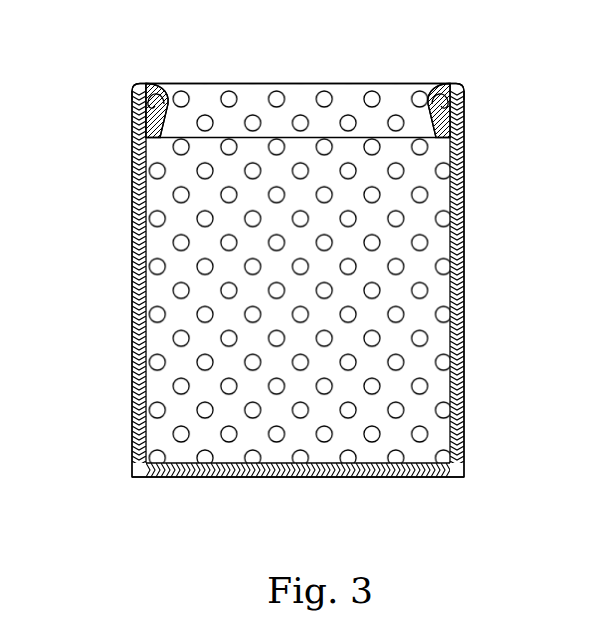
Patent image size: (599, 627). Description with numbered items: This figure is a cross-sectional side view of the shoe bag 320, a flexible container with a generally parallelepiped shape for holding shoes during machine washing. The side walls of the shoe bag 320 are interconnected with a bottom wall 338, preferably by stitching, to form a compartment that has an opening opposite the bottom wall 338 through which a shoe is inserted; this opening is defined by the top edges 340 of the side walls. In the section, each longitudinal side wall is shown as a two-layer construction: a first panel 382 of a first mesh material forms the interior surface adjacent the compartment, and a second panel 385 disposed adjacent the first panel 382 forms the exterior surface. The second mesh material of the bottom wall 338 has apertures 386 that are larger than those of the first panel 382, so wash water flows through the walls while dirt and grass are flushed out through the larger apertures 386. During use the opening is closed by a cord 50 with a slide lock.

The shoe bag 320 is at (496, 43).
The bottom wall 338 is at (299, 478).
The top edges 340 is at (142, 86).
The cord 50 is at (148, 107).
The first panel 382 is at (140, 201).
The second panel 385 is at (134, 254).
The apertures 386 is at (428, 239).